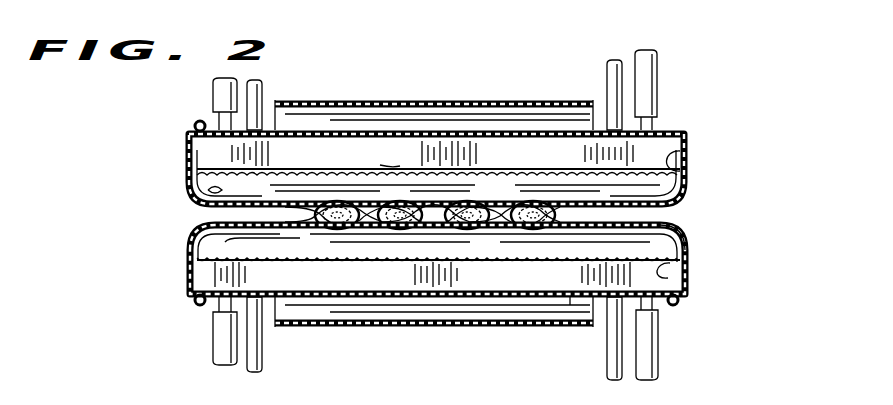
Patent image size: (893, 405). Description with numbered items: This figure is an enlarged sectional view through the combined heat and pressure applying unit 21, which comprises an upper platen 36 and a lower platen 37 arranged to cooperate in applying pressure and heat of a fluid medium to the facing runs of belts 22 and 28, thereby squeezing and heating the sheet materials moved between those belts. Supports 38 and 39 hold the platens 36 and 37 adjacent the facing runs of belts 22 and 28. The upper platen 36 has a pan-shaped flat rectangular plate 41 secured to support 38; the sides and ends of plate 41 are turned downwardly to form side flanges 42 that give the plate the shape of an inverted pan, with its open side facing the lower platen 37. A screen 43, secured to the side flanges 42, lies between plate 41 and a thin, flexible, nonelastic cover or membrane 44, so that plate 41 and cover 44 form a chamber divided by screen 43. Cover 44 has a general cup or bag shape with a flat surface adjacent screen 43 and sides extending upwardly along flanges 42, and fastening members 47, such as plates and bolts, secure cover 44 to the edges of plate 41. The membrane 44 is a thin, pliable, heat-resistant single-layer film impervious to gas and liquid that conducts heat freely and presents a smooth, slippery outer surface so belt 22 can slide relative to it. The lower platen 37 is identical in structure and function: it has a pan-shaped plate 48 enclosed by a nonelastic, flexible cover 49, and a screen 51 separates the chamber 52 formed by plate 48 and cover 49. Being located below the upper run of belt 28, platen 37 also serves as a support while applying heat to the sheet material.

The combined heat and pressure applying unit 21 is at (707, 129).
The belt 22 is at (463, 100).
The belt 28 is at (212, 221).
The upper platen 36 is at (185, 155).
The lower platen 37 is at (183, 295).
The support 38 is at (259, 97).
The support 39 is at (263, 350).
The pan-shaped flat rectangular plate 41 is at (529, 131).
The side flanges 42 is at (684, 160).
The screen 43 is at (379, 165).
The cover or membrane 44 is at (208, 190).
The fastening members 47 is at (199, 123).
The pan-shaped plate 48 is at (570, 298).
The cover 49 is at (689, 243).
The screen 51 is at (688, 277).
The chamber 52 is at (344, 276).